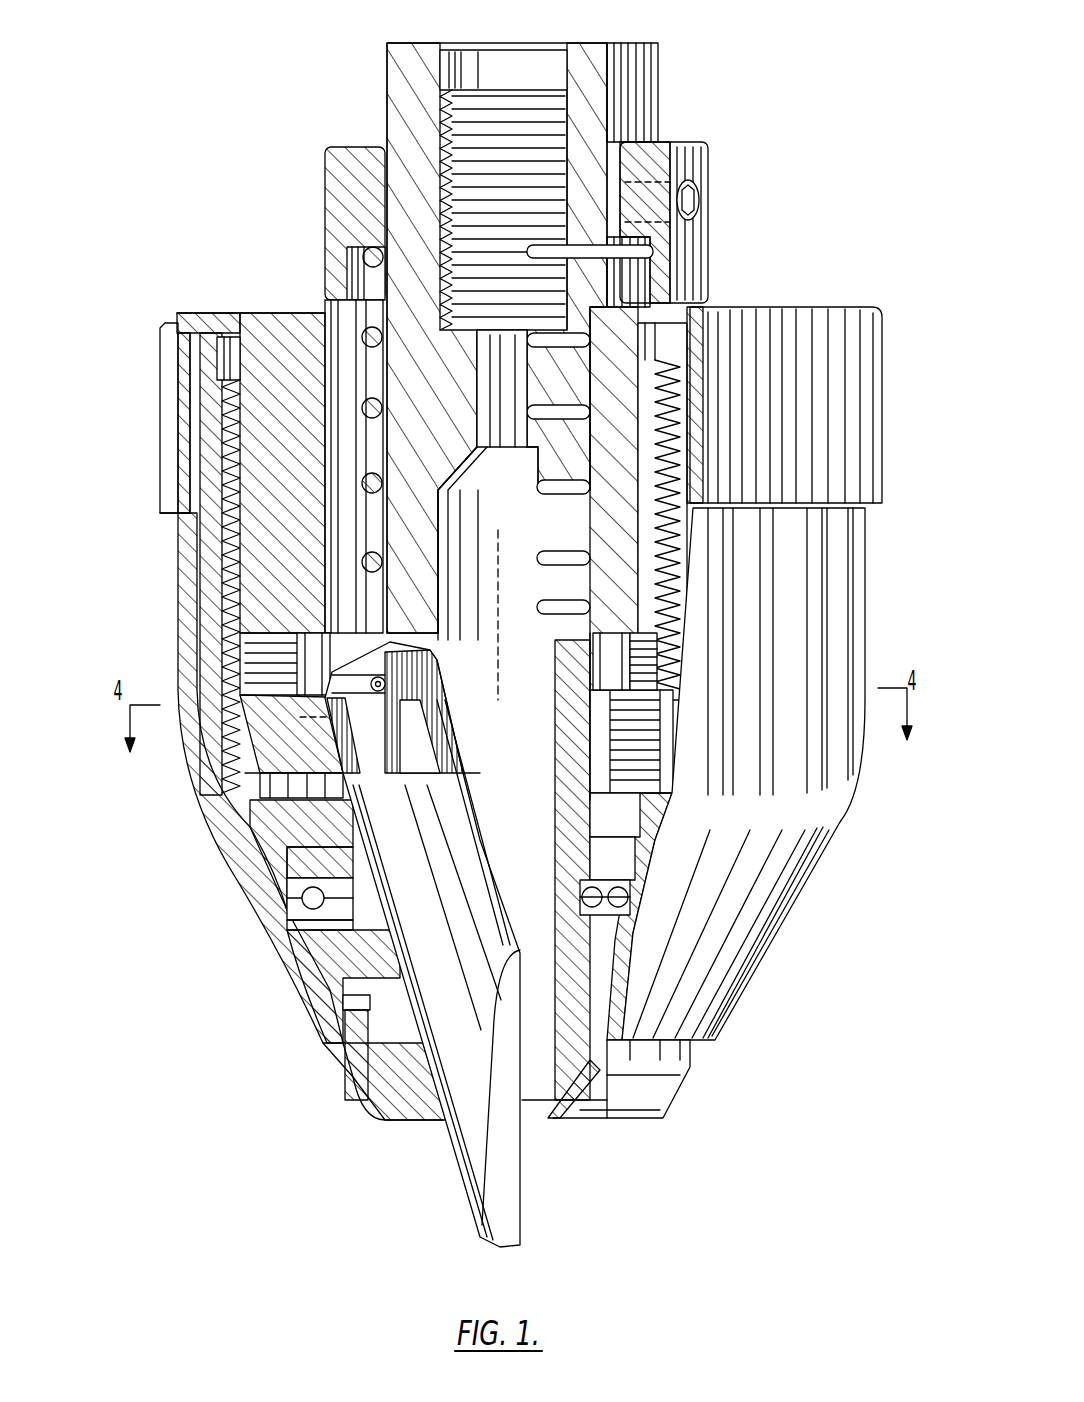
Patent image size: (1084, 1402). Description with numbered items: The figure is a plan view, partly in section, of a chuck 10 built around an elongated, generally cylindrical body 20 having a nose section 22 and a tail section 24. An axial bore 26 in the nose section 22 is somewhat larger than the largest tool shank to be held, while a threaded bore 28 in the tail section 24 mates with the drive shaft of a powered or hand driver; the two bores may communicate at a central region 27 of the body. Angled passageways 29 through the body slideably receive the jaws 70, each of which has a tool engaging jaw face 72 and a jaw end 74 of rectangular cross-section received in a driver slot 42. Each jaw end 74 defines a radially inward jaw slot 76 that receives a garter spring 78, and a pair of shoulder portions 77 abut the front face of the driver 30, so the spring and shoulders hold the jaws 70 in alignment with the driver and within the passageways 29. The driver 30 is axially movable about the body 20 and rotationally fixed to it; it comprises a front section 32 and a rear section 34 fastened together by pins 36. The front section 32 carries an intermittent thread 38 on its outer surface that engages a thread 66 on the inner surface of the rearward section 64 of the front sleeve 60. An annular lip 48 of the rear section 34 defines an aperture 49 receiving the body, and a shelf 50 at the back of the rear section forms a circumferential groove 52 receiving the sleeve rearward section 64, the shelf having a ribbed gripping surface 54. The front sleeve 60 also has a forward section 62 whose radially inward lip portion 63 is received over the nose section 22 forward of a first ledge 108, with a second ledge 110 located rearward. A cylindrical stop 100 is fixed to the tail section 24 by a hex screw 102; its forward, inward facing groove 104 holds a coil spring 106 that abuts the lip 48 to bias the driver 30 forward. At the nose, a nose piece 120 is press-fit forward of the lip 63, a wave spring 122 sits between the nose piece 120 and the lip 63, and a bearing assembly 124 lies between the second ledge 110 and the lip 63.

The chuck 10 is at (163, 206).
The body 20 is at (208, 530).
The nose section 22 is at (348, 1010).
The tail section 24 is at (660, 95).
The axial bore 26 is at (537, 1085).
The central region 27 is at (512, 355).
The threaded bore 28 is at (503, 103).
The passageways 29 is at (443, 1118).
The driver 30 is at (245, 603).
The front section 32 is at (265, 672).
The rear section 34 is at (250, 313).
The pins 36 is at (597, 672).
The thread 38 is at (657, 710).
The driver slot 42 is at (283, 745).
The annular lip 48 is at (330, 612).
The aperture 49 is at (420, 635).
The shelf 50 is at (165, 470).
The circumferential groove 52 is at (226, 395).
The gripping surface 54 is at (860, 380).
The front sleeve 60 is at (866, 570).
The forward section 62 is at (790, 910).
The annular lip portion 63 is at (357, 985).
The rearward section 64 is at (183, 380).
The thread 66 is at (305, 662).
The jaws 70 is at (495, 868).
The jaw face 72 is at (521, 1193).
The jaw end 74 is at (465, 752).
The jaw slot 76 is at (350, 693).
The shoulder portions 77 is at (392, 768).
The garter spring 78 is at (386, 686).
The stop 100 is at (710, 150).
The hex screw 102 is at (700, 200).
The circumferential groove 104 is at (340, 280).
The coil spring 106 is at (365, 258).
The first ledge 108 is at (377, 975).
The second ledge 110 is at (347, 856).
The nose piece 120 is at (360, 1095).
The wave spring 122 is at (350, 1017).
The bearing assembly 124 is at (275, 894).